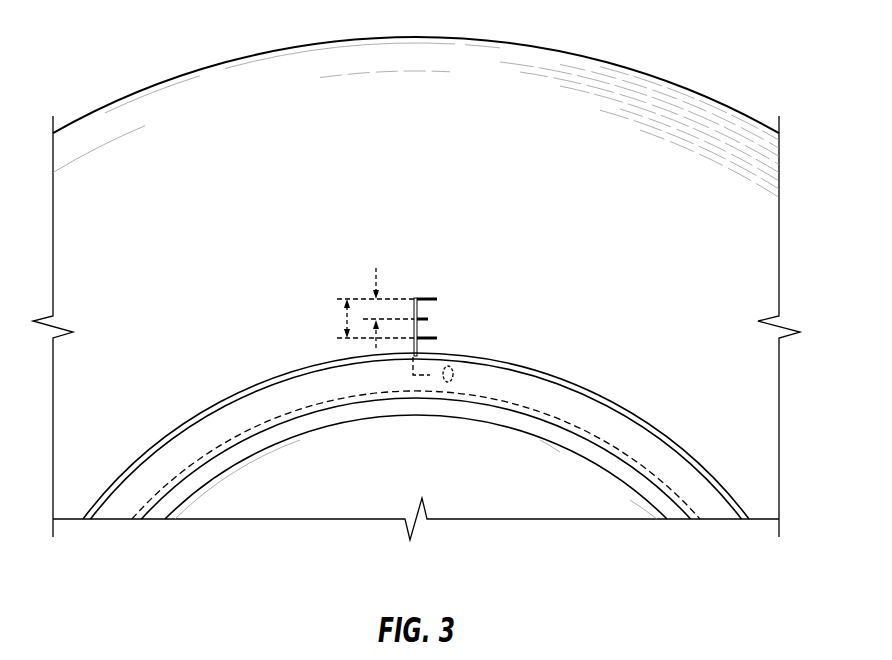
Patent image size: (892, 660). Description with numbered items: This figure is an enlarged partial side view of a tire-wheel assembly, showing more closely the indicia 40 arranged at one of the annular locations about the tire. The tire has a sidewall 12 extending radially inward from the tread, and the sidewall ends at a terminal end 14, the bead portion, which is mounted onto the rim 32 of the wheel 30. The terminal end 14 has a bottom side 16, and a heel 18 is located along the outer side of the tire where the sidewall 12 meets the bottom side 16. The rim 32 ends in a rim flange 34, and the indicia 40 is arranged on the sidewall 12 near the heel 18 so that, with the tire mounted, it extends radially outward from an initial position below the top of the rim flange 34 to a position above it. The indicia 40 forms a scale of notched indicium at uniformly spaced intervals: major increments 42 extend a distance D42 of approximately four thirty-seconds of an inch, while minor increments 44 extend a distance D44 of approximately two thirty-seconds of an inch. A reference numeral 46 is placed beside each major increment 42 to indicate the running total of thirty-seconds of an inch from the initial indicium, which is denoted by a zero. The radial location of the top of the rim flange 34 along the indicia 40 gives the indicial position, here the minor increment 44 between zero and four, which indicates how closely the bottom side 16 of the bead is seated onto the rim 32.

The sidewall 12 is at (762, 247).
The terminal end 14 is at (755, 505).
The bottom side 16 is at (650, 470).
The heel 18 is at (713, 510).
The wheel 30 is at (293, 514).
The rim 32 is at (180, 480).
The rim flange 34 is at (115, 510).
The indicia 40 is at (437, 312).
The major increment 42 is at (418, 298).
The minor increment 44 is at (415, 298).
The reference numeral 46 is at (458, 300).
The distance of major increment D42 is at (348, 318).
The distance of minor increment D44 is at (376, 272).